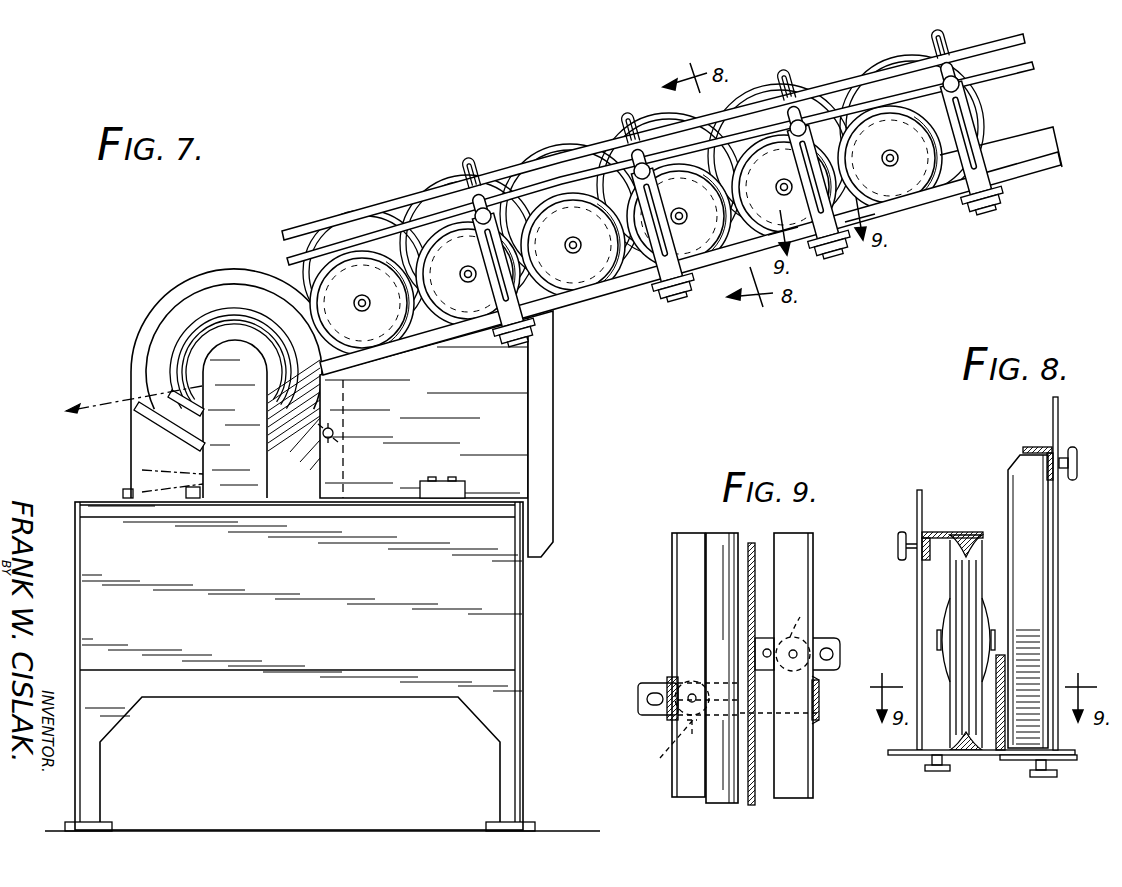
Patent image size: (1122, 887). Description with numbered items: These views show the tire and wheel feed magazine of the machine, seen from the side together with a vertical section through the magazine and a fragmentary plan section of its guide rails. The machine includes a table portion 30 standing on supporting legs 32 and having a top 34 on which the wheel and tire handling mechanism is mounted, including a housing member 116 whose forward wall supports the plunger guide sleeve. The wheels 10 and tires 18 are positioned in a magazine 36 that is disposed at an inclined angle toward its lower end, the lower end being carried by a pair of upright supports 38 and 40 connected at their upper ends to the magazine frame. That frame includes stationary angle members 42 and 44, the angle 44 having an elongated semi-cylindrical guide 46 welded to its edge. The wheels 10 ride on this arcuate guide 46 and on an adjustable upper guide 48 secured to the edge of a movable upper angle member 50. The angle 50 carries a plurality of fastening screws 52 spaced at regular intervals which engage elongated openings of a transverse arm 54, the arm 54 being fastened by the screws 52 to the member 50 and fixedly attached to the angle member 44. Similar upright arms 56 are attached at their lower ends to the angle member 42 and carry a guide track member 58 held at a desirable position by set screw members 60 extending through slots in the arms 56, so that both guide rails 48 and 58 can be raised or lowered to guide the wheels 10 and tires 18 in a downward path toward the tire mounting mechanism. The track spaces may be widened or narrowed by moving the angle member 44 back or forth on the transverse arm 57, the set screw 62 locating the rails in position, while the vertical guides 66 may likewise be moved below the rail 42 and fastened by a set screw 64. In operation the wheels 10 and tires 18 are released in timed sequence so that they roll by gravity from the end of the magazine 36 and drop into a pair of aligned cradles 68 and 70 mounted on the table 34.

In FIG. 7, the wheels 10 is at (360, 288).
In FIG. 8, the wheels 10 is at (957, 578).
In FIG. 7, the tires 18 is at (203, 322).
In FIG. 8, the tires 18 is at (1030, 544).
In FIG. 7, the table portion 30 is at (522, 618).
In FIG. 7, the supporting legs 32 is at (97, 786).
In FIG. 7, the top 34 is at (515, 509).
In FIG. 7, the magazine 36 is at (620, 302).
In FIG. 7, the upright support 38 is at (348, 463).
In FIG. 7, the upright support 40 is at (555, 440).
In FIG. 8, the stationary angle member 42 is at (1060, 752).
In FIG. 9, the stationary angle member 42 is at (795, 797).
In FIG. 7, the stationary angle member 44 is at (1062, 168).
In FIG. 8, the stationary angle member 44 is at (918, 742).
In FIG. 9, the stationary angle member 44 is at (685, 775).
In FIG. 8, the elongated semi-cylindrical guide 46 is at (967, 752).
In FIG. 9, the elongated semi-cylindrical guide 46 is at (725, 797).
In FIG. 8, the adjustable upper guide 48 is at (970, 536).
In FIG. 7, the movable upper angle member 50 is at (292, 259).
In FIG. 8, the movable upper angle member 50 is at (937, 532).
In FIG. 7, the fastening screws 52 is at (488, 205).
In FIG. 8, the fastening screws 52 is at (908, 530).
In FIG. 8, the transverse arm 54 is at (920, 618).
In FIG. 9, the transverse arm 54 is at (668, 712).
In FIG. 8, the upright arms 56 is at (1055, 627).
In FIG. 9, the upright arms 56 is at (820, 695).
In FIG. 8, the transverse arm 57 is at (980, 757).
In FIG. 9, the transverse arm 57 is at (770, 712).
In FIG. 7, the guide track member 58 is at (587, 147).
In FIG. 8, the guide track member 58 is at (1037, 447).
In FIG. 8, the set screw members 60 is at (1077, 463).
In FIG. 7, the set screw 62 is at (972, 218).
In FIG. 8, the set screw 62 is at (935, 771).
In FIG. 9, the set screw 62 is at (660, 758).
In FIG. 7, the set screw 64 is at (1003, 206).
In FIG. 8, the set screw 64 is at (1045, 778).
In FIG. 9, the set screw 64 is at (800, 617).
In FIG. 8, the vertical guides 66 is at (1003, 667).
In FIG. 9, the vertical guides 66 is at (755, 590).
In FIG. 7, the cradle 68 is at (150, 418).
In FIG. 7, the cradle 70 is at (190, 378).
In FIG. 7, the housing member 116 is at (254, 462).